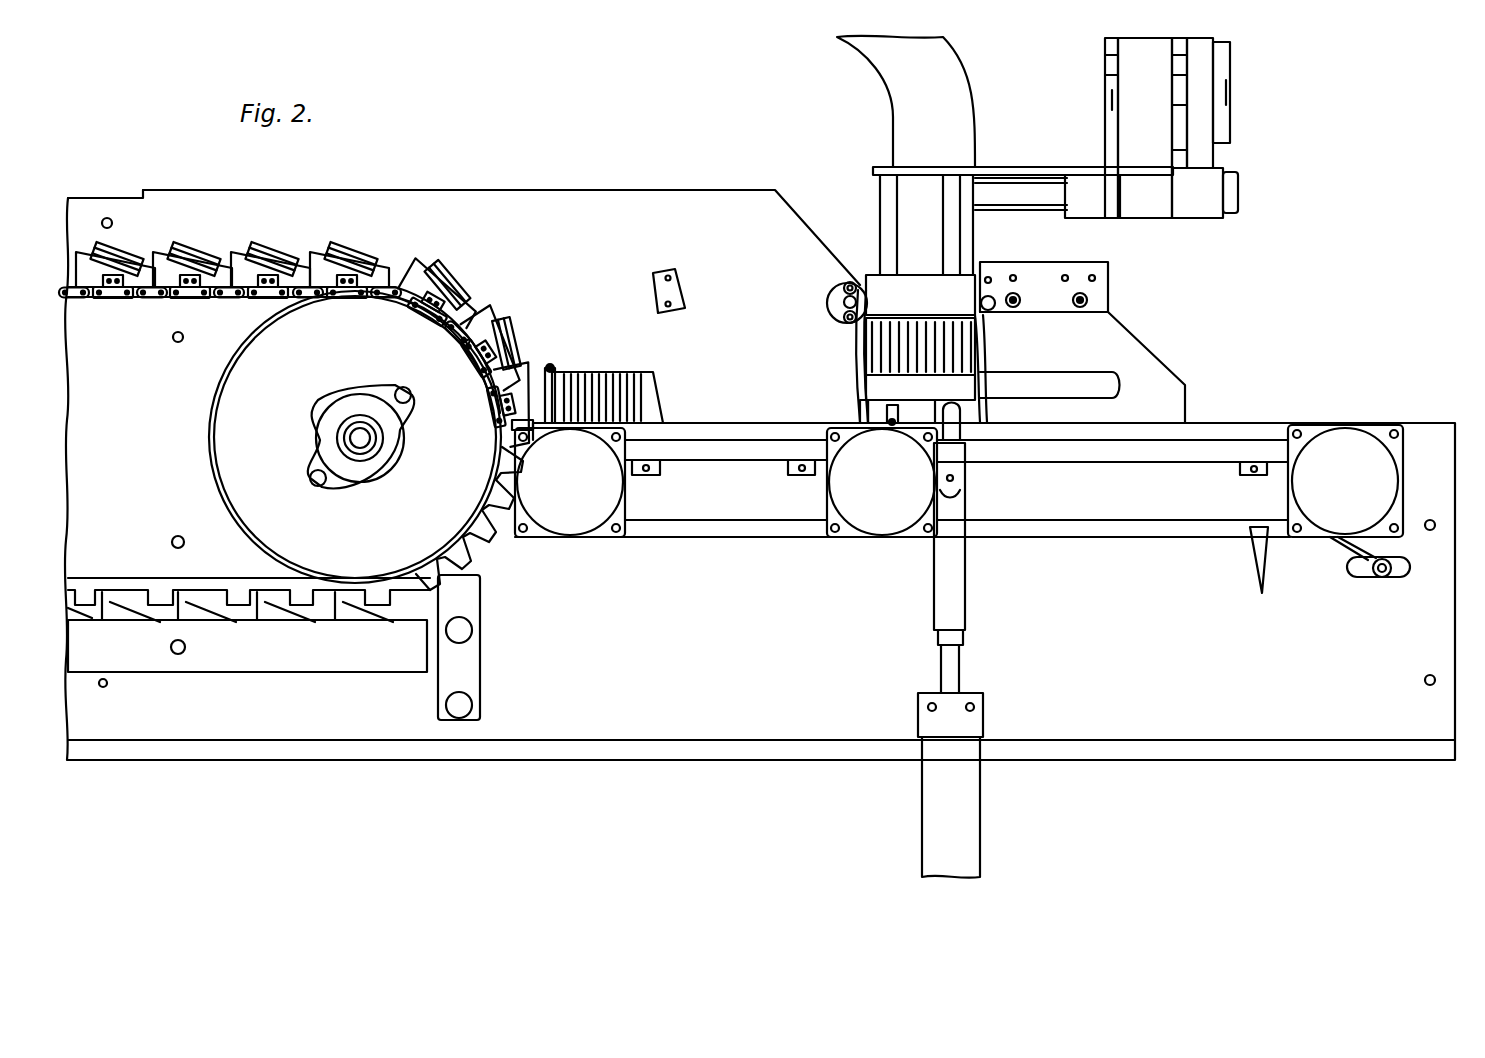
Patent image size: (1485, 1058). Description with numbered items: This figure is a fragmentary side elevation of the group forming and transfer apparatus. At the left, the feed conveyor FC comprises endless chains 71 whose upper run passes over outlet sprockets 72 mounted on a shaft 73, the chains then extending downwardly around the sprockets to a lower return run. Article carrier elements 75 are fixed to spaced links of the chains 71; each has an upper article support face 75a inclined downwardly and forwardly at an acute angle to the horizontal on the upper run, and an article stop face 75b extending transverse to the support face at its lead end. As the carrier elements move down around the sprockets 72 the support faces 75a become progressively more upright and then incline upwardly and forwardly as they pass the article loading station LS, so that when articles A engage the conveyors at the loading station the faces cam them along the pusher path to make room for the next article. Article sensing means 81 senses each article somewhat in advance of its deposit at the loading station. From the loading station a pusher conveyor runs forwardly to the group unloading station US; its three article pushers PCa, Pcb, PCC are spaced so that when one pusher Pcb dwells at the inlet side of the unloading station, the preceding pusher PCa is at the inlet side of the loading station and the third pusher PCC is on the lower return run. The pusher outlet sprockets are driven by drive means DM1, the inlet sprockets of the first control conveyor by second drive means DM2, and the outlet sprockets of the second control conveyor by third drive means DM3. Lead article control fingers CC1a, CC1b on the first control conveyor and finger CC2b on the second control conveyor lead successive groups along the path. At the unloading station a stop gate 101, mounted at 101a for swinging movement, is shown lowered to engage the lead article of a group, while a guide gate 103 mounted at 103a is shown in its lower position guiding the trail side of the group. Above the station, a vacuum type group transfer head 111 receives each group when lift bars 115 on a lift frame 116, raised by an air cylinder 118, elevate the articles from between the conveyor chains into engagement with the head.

The endless chains 71 is at (143, 299).
The outlet sprockets 72 is at (228, 448).
The shaft 73 is at (360, 440).
The article carrier elements 75 is at (248, 275).
The article support face 75a is at (500, 303).
The article stop face 75b is at (527, 360).
The article sensing means 81 is at (677, 277).
The stop gate 101 is at (980, 345).
The stop gate mounting 101a is at (990, 298).
The guide gate 103 is at (858, 342).
The guide gate mounting 103a is at (845, 283).
The vacuum type group transfer head 111 is at (930, 290).
The lift bars 115 is at (1045, 388).
The lift frame 116 is at (953, 579).
The air cylinder 118 is at (965, 800).
The articles A is at (405, 252).
The feed conveyor FC is at (223, 207).
The article loading station LS is at (550, 364).
The lead article control finger CC1a is at (660, 400).
The lead article control finger CC1b is at (1250, 560).
The lead article control finger CC2b is at (1360, 575).
The drive means DM1 is at (878, 517).
The second drive means DM2 is at (557, 512).
The third drive means DM3 is at (1335, 510).
The article pusher PCa is at (525, 437).
The article pusher Pcb is at (862, 410).
The article pusher PCC is at (738, 537).
The group unloading station US is at (892, 418).